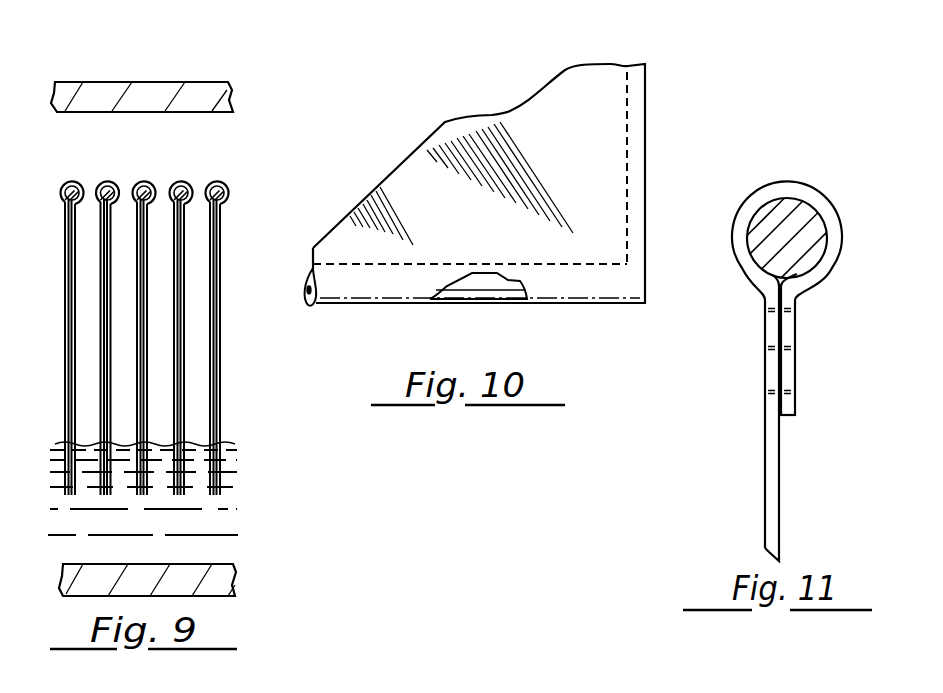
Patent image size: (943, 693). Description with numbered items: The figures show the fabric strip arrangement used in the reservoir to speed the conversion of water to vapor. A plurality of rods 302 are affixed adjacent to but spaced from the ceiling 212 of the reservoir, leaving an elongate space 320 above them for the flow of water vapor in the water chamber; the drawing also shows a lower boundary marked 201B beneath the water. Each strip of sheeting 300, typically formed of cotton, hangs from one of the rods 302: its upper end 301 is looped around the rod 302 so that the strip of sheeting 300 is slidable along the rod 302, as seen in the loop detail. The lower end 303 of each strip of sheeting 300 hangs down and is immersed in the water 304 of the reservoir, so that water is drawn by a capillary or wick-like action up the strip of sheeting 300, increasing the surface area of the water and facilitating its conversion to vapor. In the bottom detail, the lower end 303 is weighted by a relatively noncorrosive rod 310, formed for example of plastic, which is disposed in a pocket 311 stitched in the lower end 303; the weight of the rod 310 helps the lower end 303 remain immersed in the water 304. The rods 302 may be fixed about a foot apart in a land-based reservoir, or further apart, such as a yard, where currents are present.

In FIG. 9, the ceiling 212 is at (207, 82).
In FIG. 9, the rod 302 is at (98, 181).
In FIG. 11, the rod 302 is at (790, 208).
In FIG. 9, the elongate space 320 is at (151, 154).
In FIG. 9, the water 304 is at (62, 444).
In FIG. 9, the lower plate 201B is at (212, 589).
In FIG. 10, the strip of sheeting 300 is at (645, 93).
In FIG. 11, the strip of sheeting 300 is at (765, 497).
In FIG. 10, the lower end 303 is at (410, 186).
In FIG. 10, the rod 310 is at (512, 303).
In FIG. 10, the pocket 311 is at (302, 300).
In FIG. 11, the upper end 301 is at (763, 416).